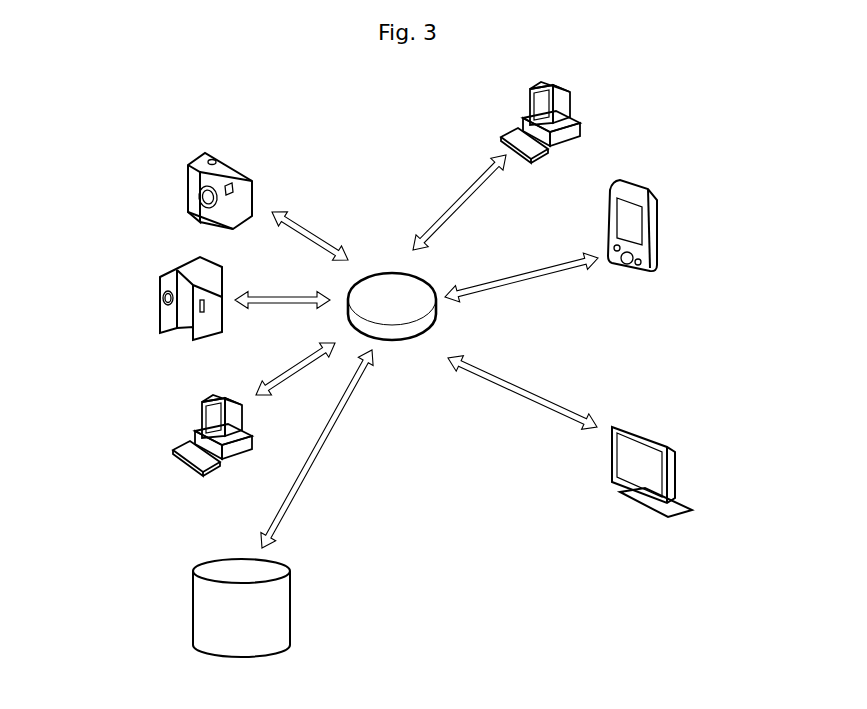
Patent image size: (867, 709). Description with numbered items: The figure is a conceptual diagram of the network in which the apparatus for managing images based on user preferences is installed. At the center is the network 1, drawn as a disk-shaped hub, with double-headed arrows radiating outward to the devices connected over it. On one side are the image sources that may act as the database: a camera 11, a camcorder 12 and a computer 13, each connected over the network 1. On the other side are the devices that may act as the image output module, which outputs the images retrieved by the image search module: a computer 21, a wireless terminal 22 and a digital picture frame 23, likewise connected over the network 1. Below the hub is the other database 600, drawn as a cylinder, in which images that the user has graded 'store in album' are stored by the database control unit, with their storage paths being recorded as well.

The network 1 is at (390, 285).
The camera 11 is at (178, 180).
The camcorder 12 is at (150, 286).
The computer 13 is at (178, 478).
The computer 21 is at (582, 105).
The wireless terminal 22 is at (667, 230).
The digital picture frame 23 is at (688, 467).
The other database 600 is at (290, 605).